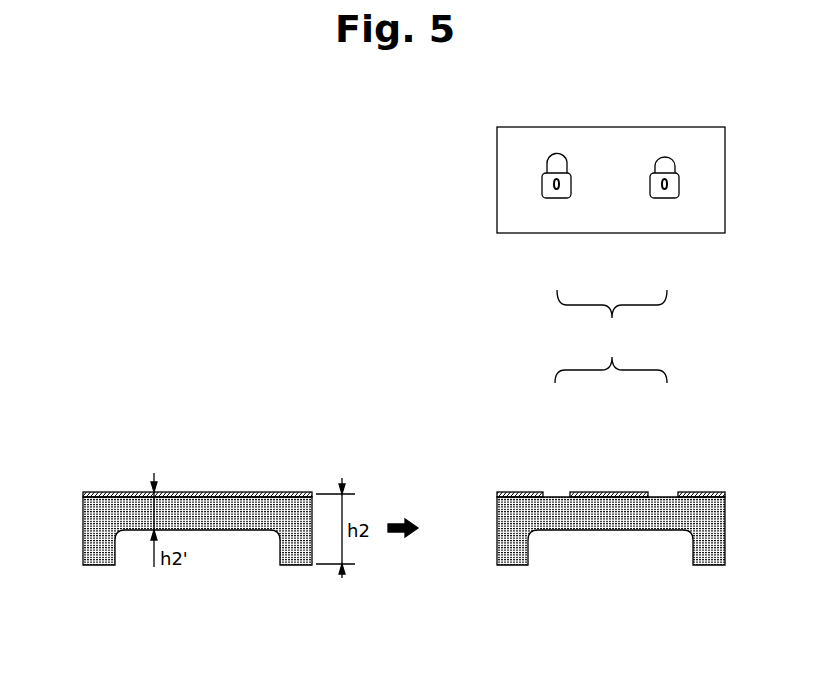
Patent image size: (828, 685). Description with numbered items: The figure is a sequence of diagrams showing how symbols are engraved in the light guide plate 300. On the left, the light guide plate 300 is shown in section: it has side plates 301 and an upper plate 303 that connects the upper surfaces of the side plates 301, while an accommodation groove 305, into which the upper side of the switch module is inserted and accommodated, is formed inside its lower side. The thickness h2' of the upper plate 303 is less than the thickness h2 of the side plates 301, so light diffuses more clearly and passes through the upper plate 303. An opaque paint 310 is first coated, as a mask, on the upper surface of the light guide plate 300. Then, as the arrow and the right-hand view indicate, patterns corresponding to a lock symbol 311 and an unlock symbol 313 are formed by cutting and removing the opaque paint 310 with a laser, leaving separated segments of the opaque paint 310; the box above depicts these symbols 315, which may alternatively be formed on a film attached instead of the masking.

The light guide plate 300 is at (100, 512).
The side plate 301 is at (97, 557).
The upper plate 303 is at (240, 497).
The accommodation groove 305 is at (216, 538).
The opaque paint 310 is at (116, 491).
The lock symbol 311 is at (665, 198).
The unlock symbol 313 is at (557, 198).
The symbols 315 is at (611, 336).